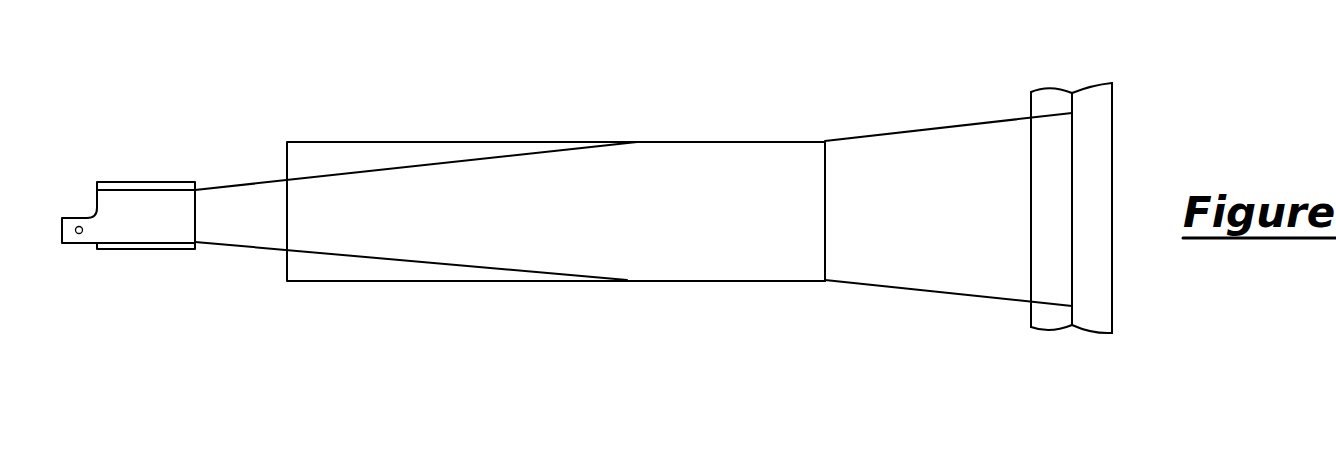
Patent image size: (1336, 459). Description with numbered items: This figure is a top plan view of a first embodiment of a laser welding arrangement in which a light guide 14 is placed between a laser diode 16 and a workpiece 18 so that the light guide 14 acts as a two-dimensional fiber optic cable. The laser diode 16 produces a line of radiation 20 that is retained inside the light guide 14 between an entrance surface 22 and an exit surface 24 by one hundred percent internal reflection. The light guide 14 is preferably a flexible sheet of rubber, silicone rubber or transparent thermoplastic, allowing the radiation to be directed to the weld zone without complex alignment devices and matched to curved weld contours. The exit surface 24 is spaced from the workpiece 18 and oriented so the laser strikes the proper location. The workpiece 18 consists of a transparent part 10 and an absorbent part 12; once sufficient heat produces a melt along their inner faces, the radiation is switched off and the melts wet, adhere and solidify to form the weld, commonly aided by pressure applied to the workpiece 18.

The transparent part 10 is at (1038, 102).
The absorbent part 12 is at (1093, 312).
The light guide 14 is at (429, 142).
The laser diode 16 is at (133, 180).
The workpiece 18 is at (1028, 325).
The line of radiation 20 is at (237, 202).
The entrance surface 22 is at (285, 265).
The exit surface 24 is at (825, 233).